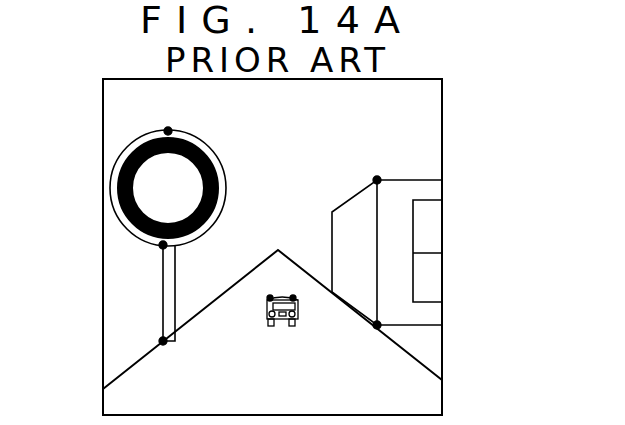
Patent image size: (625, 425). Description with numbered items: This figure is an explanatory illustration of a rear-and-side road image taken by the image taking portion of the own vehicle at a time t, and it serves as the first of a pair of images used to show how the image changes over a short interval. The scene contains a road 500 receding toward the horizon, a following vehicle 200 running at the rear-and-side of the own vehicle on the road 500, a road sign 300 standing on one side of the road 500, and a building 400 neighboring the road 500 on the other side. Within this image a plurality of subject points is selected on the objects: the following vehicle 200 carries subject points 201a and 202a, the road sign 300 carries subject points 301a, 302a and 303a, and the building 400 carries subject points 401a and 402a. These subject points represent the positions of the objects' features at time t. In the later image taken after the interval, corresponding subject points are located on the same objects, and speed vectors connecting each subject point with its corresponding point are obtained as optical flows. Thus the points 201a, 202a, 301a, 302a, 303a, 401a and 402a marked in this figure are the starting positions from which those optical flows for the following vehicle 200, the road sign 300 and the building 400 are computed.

The road sign 300 is at (212, 148).
The subject point on the road sign 301a is at (168, 130).
The subject point on the road sign 302a is at (163, 245).
The subject point on the road sign 303a is at (163, 341).
The following vehicle 200 is at (304, 317).
The subject point on the following vehicle 201a is at (269, 298).
The subject point on the following vehicle 202a is at (294, 298).
The building 400 is at (415, 180).
The subject point on the building 401a is at (377, 179).
The subject point on the building 402a is at (382, 330).
The road 500 is at (424, 365).